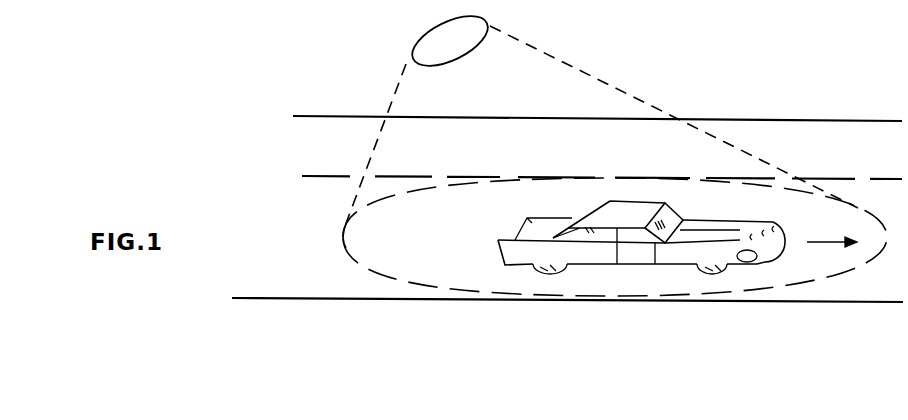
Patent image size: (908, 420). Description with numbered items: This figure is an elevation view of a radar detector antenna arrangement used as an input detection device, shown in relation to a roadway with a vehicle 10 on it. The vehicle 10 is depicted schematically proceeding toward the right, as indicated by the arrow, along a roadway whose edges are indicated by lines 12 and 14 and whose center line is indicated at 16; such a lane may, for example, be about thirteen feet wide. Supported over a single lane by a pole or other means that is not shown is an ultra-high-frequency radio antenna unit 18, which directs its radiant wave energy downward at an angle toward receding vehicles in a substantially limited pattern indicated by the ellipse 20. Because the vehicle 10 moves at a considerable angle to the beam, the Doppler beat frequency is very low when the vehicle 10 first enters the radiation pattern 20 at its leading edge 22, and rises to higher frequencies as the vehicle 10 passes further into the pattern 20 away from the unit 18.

The vehicle 10 is at (610, 201).
The roadway edge 12 is at (842, 306).
The roadway edge 14 is at (735, 119).
The center line 16 is at (838, 178).
The ultra-high-frequency radio antenna unit 18 is at (488, 22).
The radiation pattern 20 is at (422, 195).
The leading edge 22 is at (346, 236).